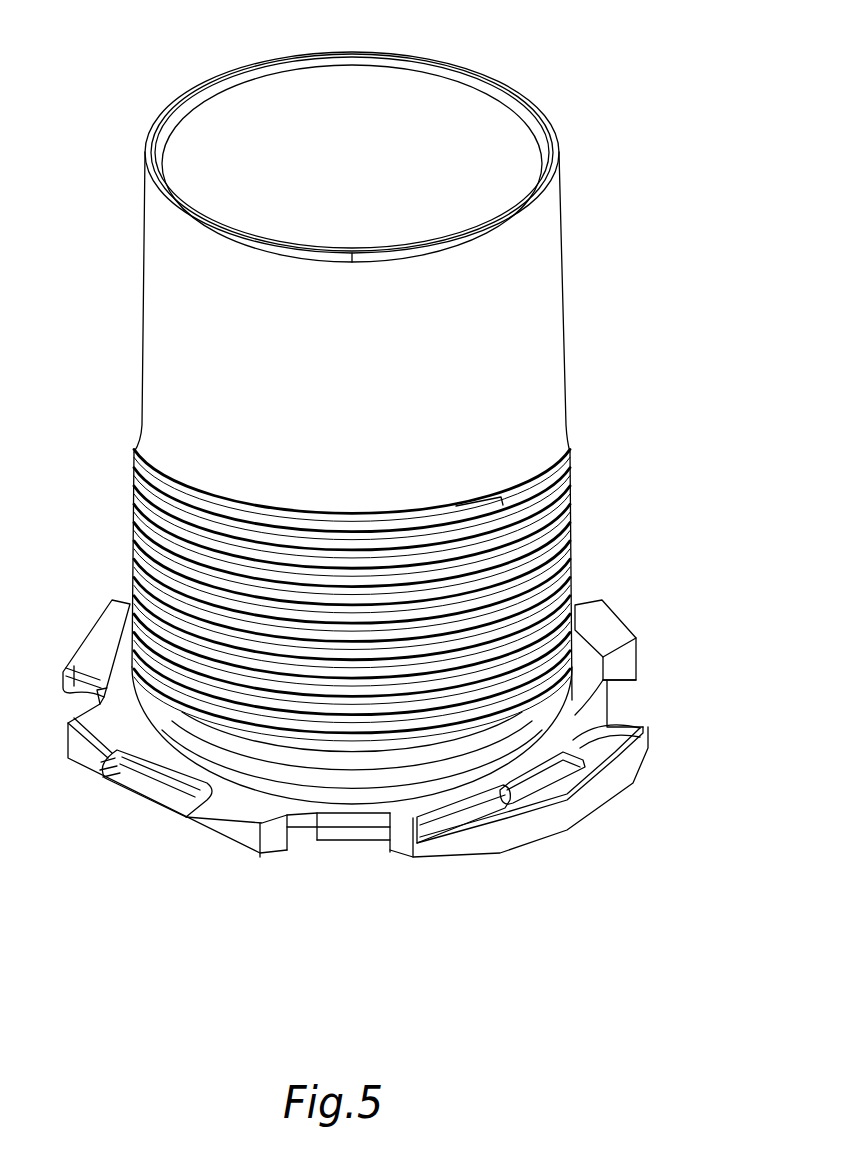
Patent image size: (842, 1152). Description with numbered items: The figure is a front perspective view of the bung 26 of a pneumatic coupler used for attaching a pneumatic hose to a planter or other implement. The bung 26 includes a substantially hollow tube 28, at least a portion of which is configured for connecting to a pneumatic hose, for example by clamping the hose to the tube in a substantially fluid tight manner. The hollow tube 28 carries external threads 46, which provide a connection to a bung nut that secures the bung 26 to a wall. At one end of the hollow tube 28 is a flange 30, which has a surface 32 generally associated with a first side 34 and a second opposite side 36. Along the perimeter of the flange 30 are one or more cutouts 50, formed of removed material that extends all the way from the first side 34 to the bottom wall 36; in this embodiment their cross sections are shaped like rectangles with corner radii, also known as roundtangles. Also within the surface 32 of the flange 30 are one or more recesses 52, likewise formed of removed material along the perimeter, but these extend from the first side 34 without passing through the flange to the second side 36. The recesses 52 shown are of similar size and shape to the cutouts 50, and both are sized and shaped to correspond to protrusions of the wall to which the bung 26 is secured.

The bung 26 is at (132, 40).
The hollow tube 28 is at (537, 300).
The external threads 46 is at (572, 503).
The flange 30 is at (607, 688).
The surface 32 is at (593, 627).
The first side 34 is at (117, 672).
The second opposite side 36 is at (587, 810).
The cutouts 50 is at (80, 700).
The recesses 52 is at (82, 632).